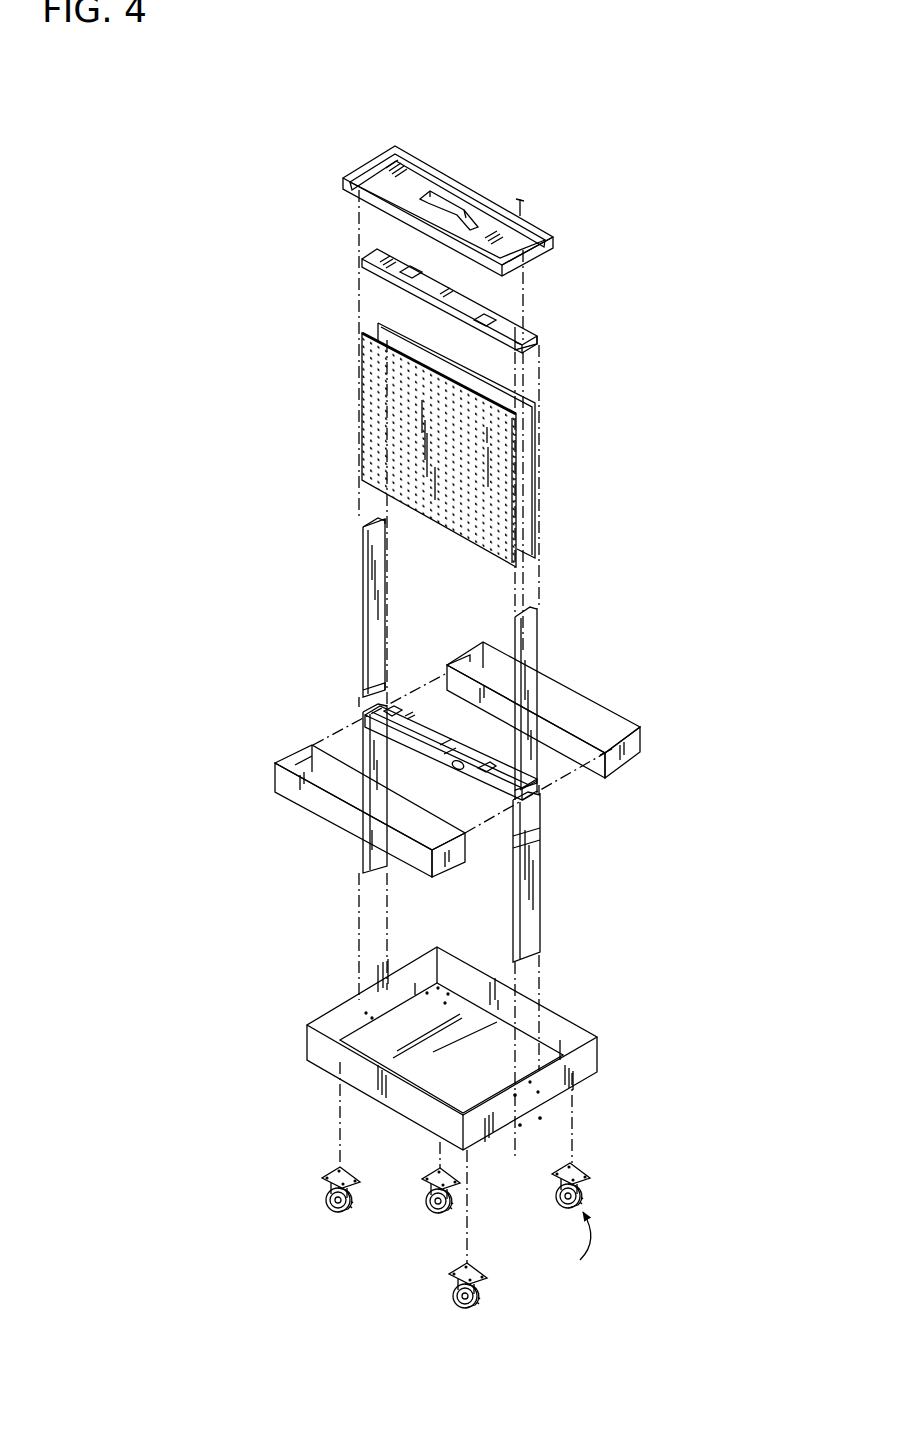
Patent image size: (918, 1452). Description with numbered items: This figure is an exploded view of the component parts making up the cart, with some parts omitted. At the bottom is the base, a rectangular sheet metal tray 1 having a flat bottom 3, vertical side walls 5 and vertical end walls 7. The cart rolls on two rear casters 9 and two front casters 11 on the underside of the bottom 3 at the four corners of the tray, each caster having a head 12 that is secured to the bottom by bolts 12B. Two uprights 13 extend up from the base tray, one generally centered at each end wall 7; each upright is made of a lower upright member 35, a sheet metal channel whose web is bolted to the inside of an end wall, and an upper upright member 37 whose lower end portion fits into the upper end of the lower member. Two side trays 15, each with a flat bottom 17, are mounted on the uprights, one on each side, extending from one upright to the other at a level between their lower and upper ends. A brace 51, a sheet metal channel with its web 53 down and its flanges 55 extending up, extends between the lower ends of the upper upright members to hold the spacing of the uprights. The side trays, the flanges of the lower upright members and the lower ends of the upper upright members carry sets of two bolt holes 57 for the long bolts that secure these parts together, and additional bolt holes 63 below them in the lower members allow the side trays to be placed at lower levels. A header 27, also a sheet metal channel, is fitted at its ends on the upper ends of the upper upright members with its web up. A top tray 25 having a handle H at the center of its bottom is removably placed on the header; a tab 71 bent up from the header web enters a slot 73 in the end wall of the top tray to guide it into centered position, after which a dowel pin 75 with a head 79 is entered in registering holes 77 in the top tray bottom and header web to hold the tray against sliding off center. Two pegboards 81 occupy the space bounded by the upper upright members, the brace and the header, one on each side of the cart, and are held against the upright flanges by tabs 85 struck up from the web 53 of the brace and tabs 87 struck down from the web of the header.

The rectangular tray 1 is at (438, 1029).
The flat bottom 3 is at (482, 1082).
The vertical side wall 5 is at (562, 1012).
The vertical end wall 7 is at (347, 993).
The rear caster 9 is at (445, 1215).
The front caster 11 is at (490, 1293).
The caster head 12 is at (524, 1221).
The bolts 12B is at (446, 990).
The upright 13 is at (423, 709).
The side tray 15 is at (650, 728).
The flat bottom 17 is at (391, 1193).
The top tray 25 is at (433, 188).
The header 27 is at (445, 303).
The lower upright member 35 is at (360, 857).
The upper upright member 37 is at (414, 623).
The brace 51 is at (402, 697).
The web 53 is at (437, 745).
The flanges 55 is at (465, 766).
The bolt holes 57 is at (452, 684).
The additional bolt holes 63 is at (517, 856).
The tab 71 is at (363, 522).
The slot 73 is at (373, 160).
The dowel pin 75 is at (523, 215).
The registering holes 77 is at (538, 340).
The head 79 is at (517, 202).
The pegboard 81 is at (364, 399).
The tabs 85 is at (398, 714).
The tabs 87 is at (418, 268).
The handle H is at (457, 197).